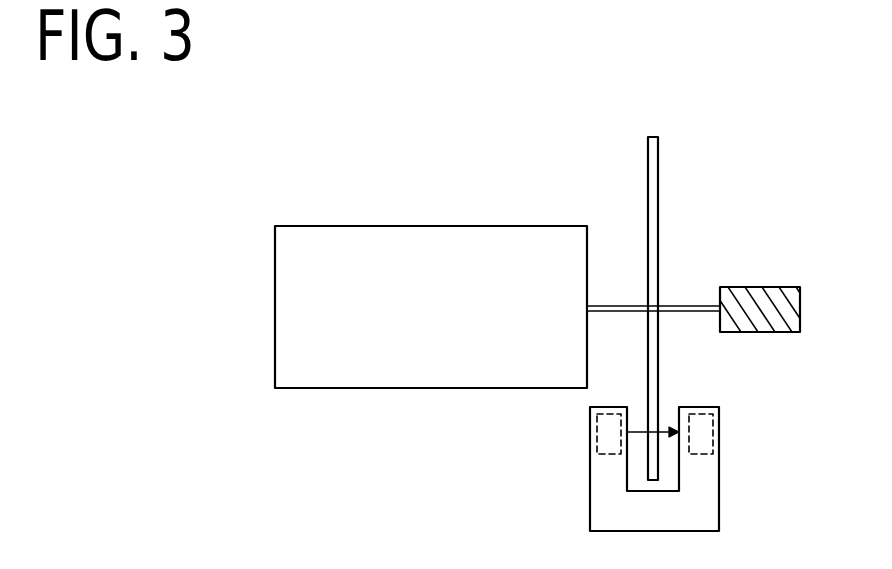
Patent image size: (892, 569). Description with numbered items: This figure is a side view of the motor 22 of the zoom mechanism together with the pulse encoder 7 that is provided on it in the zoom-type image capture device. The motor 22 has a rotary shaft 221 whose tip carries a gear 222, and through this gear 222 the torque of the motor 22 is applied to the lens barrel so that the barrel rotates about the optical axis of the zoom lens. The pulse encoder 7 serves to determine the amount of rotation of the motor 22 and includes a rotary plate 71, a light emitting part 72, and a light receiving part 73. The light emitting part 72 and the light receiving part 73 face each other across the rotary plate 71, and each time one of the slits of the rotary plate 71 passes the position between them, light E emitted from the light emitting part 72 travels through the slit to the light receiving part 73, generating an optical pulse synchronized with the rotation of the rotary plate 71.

The motor 22 is at (393, 225).
The rotary shaft 221 is at (700, 305).
The gear 222 is at (783, 295).
The rotary plate 71 is at (658, 154).
The pulse encoder 7 is at (714, 386).
The light E is at (637, 430).
The light emitting part 72 is at (597, 430).
The light receiving part 73 is at (713, 433).